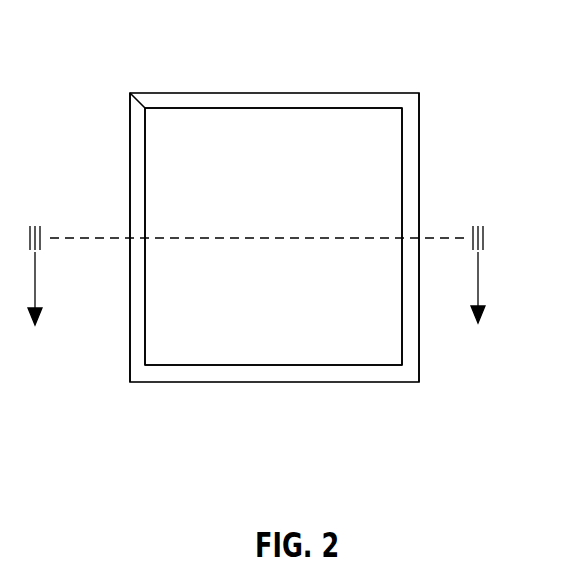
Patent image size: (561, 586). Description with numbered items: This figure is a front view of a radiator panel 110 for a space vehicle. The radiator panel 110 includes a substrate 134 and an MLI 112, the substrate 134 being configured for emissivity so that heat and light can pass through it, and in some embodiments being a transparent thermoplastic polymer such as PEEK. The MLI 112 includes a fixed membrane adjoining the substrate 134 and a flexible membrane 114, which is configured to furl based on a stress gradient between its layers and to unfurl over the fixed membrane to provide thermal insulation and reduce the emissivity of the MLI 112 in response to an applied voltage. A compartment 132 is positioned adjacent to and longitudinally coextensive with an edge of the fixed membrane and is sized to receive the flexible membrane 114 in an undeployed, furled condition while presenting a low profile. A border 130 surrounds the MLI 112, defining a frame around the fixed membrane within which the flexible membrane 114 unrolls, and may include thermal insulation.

The radiator panel 110 is at (303, 73).
The MLI 112 is at (134, 97).
The flexible membrane 114 is at (390, 185).
The border 130 is at (265, 372).
The compartment 132 is at (138, 208).
The substrate 134 is at (402, 344).